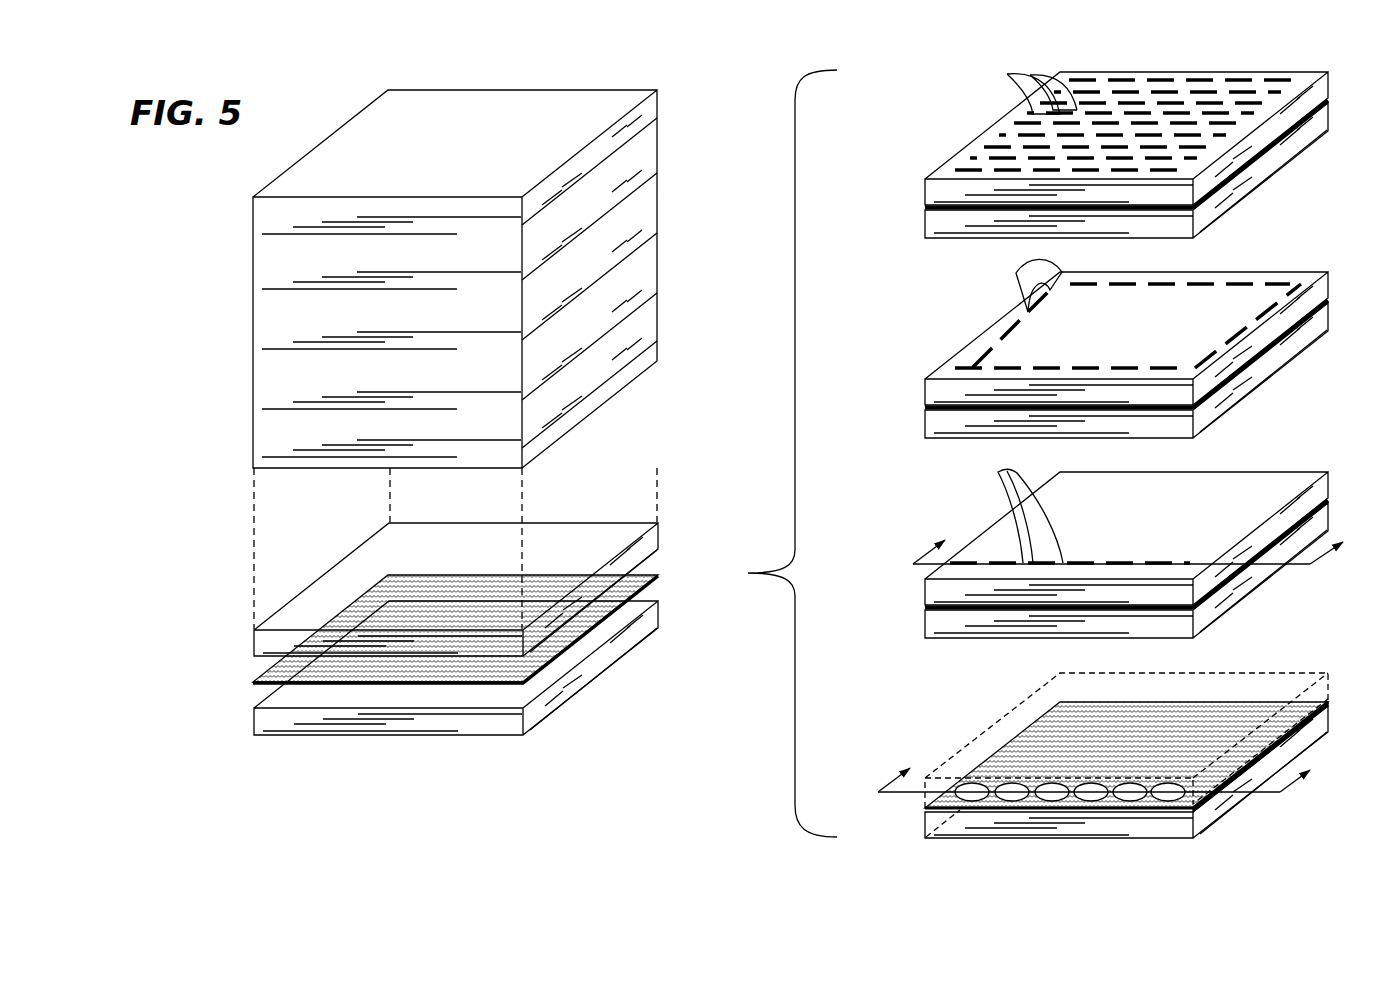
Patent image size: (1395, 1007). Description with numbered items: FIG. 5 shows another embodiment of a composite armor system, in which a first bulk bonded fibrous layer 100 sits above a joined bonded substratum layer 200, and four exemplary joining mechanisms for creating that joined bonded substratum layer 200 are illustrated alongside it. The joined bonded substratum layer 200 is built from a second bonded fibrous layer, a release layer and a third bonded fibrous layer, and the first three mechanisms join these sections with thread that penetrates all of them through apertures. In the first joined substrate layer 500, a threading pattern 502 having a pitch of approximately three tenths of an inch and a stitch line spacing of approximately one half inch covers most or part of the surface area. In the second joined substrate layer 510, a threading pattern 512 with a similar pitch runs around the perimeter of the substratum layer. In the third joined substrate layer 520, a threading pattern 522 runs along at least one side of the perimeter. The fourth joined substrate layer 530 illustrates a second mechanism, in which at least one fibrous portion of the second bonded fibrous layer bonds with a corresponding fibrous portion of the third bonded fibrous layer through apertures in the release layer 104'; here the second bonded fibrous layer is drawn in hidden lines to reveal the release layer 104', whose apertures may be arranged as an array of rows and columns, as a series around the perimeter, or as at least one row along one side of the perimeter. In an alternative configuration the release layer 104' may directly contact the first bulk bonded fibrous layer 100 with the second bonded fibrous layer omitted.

The first bulk bonded fibrous layer 100 is at (238, 196).
The joined bonded substratum layer 200 is at (439, 629).
The release layer 104' is at (1153, 757).
The first joined substrate layer 500 is at (1117, 155).
The threading pattern 502 is at (972, 172).
The second joined substrate layer 510 is at (1117, 348).
The threading pattern 512 is at (972, 368).
The third joined substrate layer 520 is at (1117, 557).
The threading pattern 522 is at (1007, 562).
The fourth joined substrate layer 530 is at (1120, 762).